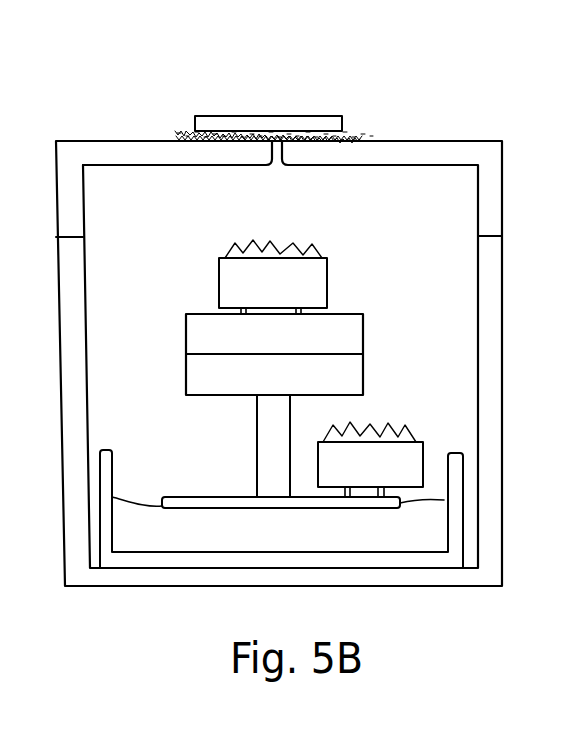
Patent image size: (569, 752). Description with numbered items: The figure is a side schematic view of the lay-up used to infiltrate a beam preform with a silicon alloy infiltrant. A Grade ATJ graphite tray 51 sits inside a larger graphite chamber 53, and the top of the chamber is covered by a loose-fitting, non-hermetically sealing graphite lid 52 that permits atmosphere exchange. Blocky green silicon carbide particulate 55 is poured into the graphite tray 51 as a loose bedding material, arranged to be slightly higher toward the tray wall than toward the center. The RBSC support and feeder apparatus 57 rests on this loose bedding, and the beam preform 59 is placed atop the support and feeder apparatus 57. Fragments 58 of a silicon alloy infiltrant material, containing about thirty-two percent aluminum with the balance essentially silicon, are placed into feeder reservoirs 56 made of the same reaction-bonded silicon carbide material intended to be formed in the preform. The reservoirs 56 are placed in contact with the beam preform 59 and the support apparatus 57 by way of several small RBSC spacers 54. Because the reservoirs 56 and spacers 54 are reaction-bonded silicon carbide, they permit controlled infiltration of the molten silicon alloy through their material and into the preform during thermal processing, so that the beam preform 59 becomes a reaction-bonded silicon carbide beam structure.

The graphite tray 51 is at (455, 490).
The graphite lid 52 is at (493, 190).
The graphite chamber 53 is at (488, 553).
The RBSC spacers 54 is at (280, 310).
The silicon carbide particulate 55 is at (432, 528).
The feeder reservoirs 56 is at (268, 276).
The RBSC support and feeder apparatus 57 is at (178, 503).
The fragments of silicon alloy infiltrant material 58 is at (253, 246).
The beam preform 59 is at (342, 370).